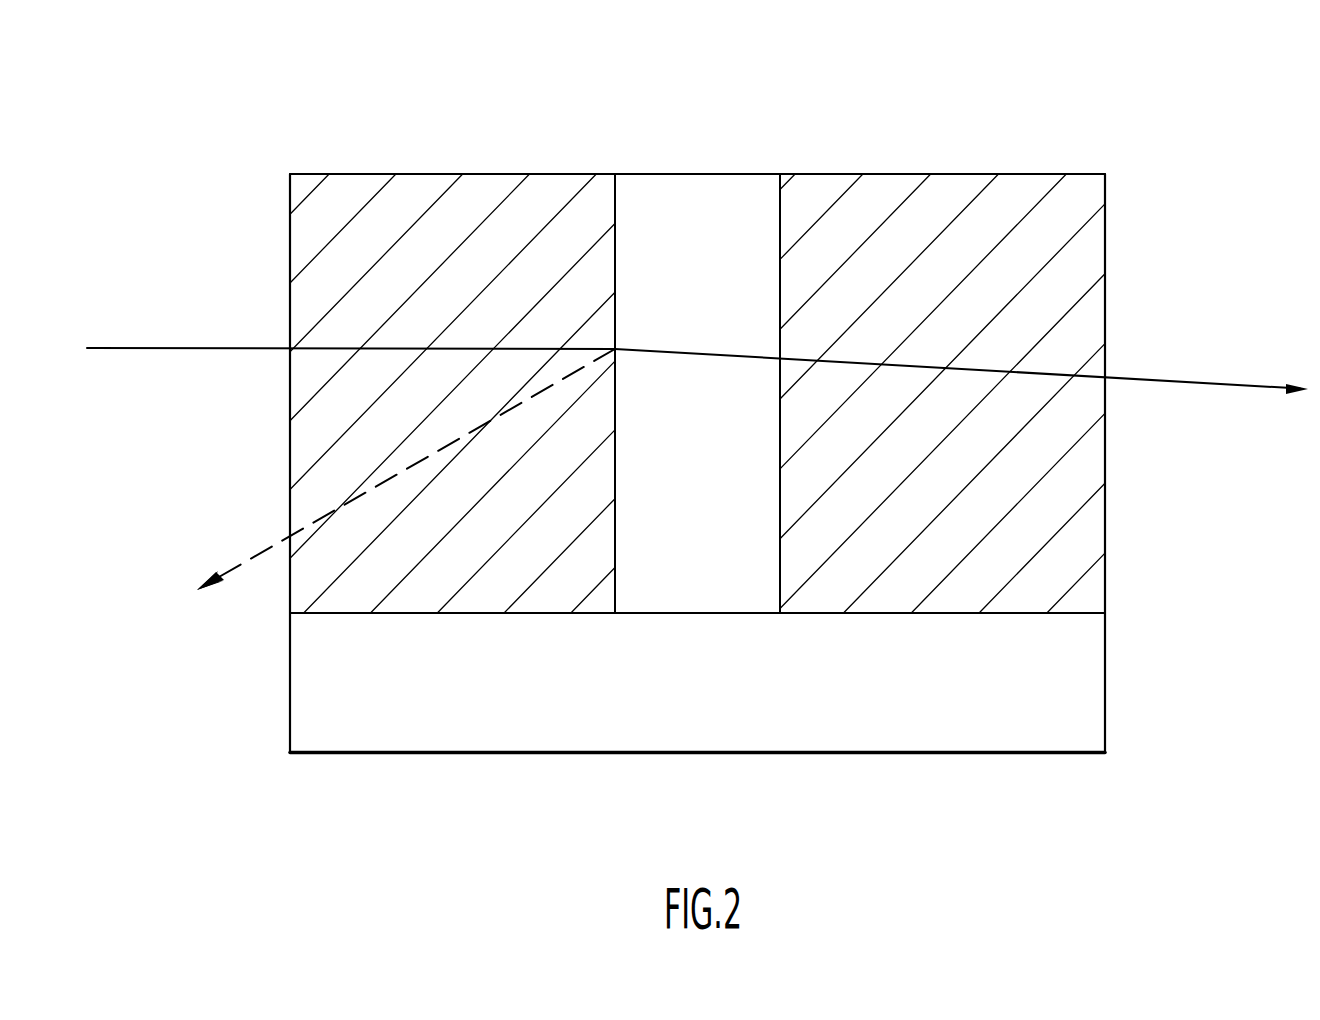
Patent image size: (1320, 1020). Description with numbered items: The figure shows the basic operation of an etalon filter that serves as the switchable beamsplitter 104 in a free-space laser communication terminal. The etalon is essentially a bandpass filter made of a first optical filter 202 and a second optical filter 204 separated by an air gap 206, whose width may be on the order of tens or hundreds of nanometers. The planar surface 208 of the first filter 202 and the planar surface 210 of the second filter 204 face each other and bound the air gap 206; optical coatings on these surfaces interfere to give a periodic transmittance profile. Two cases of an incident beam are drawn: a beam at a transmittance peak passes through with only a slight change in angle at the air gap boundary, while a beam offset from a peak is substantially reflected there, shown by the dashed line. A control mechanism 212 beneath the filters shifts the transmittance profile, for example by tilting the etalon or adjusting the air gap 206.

The beamsplitter 104 is at (1254, 129).
The first optical filter 202 is at (473, 192).
The second optical filter 204 is at (947, 197).
The air gap 206 is at (692, 198).
The planar surface 208 is at (617, 205).
The planar surface 210 is at (780, 210).
The control mechanism 212 is at (1028, 755).